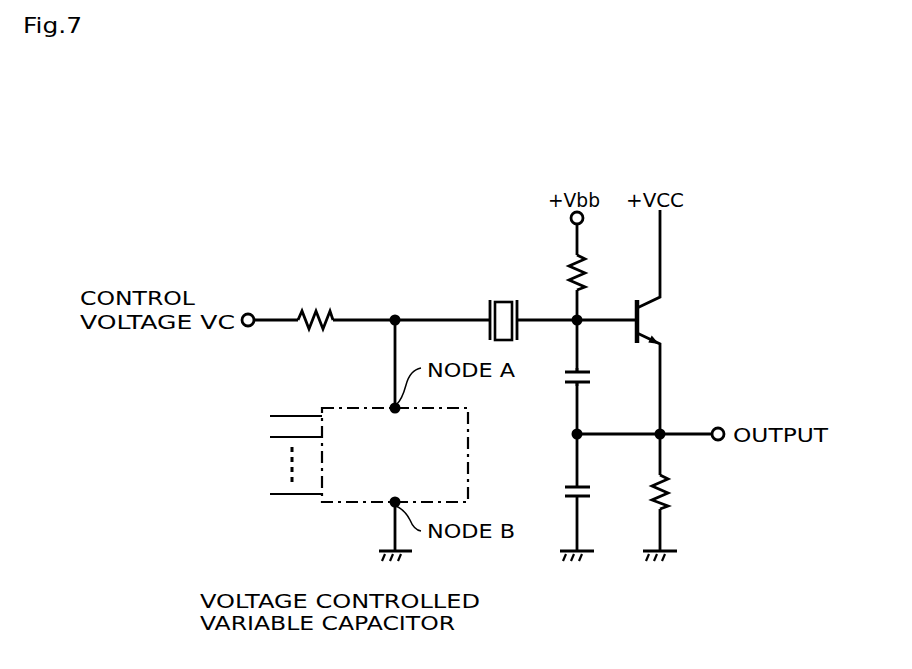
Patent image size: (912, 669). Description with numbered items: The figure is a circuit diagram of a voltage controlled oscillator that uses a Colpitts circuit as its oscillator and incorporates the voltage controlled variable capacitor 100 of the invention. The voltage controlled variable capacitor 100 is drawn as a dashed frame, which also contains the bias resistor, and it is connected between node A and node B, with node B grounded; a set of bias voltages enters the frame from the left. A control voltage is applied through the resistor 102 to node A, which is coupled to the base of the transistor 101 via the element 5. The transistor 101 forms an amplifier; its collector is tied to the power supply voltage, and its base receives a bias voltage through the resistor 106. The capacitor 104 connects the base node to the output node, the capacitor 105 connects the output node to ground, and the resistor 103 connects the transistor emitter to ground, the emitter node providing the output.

The voltage controlled variable capacitor 100 is at (343, 517).
The transistor 101 is at (652, 320).
The resistor 102 is at (313, 313).
The resistor 103 is at (668, 499).
The capacitor 104 is at (565, 375).
The capacitor 105 is at (565, 491).
The resistor 106 is at (572, 282).
The crystal resonator 5 is at (505, 300).